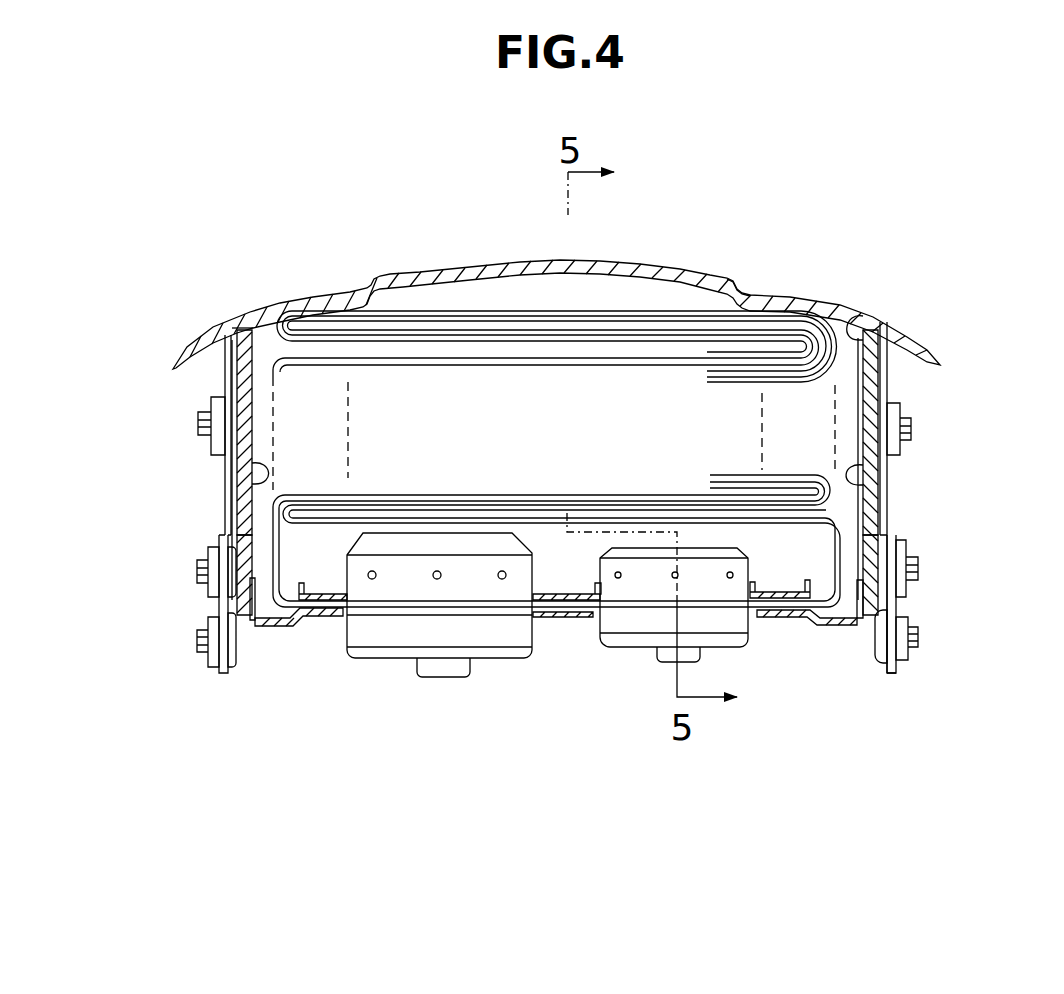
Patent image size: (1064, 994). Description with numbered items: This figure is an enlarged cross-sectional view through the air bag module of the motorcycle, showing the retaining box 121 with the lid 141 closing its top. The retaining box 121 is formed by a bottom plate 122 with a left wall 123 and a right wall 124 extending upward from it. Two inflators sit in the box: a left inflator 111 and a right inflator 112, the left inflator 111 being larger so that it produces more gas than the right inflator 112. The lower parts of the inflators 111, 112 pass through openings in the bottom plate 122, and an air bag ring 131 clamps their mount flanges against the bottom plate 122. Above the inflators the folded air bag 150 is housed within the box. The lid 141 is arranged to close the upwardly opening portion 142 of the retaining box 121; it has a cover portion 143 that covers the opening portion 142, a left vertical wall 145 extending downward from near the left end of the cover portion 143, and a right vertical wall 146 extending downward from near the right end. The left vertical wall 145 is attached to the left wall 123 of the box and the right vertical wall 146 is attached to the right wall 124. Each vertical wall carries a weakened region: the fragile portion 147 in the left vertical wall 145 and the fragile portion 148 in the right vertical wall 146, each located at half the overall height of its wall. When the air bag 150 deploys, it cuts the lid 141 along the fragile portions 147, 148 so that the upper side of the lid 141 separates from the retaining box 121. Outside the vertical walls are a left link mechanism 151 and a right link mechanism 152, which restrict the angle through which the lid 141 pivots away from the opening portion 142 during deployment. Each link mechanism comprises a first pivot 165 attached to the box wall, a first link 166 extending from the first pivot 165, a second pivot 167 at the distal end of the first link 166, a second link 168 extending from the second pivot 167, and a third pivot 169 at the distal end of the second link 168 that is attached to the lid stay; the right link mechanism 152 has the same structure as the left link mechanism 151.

The left inflator 111 is at (477, 674).
The right inflator 112 is at (640, 664).
The retaining box 121 is at (300, 266).
The bottom plate 122 is at (318, 624).
The left wall 123 is at (245, 527).
The right wall 124 is at (870, 498).
The air bag ring 131 is at (782, 630).
The lid 141 is at (690, 264).
The opening portion 142 is at (860, 320).
The cover portion 143 is at (740, 288).
The left vertical wall 145 is at (245, 380).
The right vertical wall 146 is at (875, 370).
The fragile portion 147 is at (246, 486).
The fragile portion 148 is at (866, 478).
The air bag 150 is at (802, 312).
The left link mechanism 151 is at (159, 540).
The right link mechanism 152 is at (939, 578).
The first pivot 165 is at (198, 572).
The first link 166 is at (213, 676).
The second pivot 167 is at (198, 642).
The second link 168 is at (226, 676).
The third pivot 169 is at (199, 423).